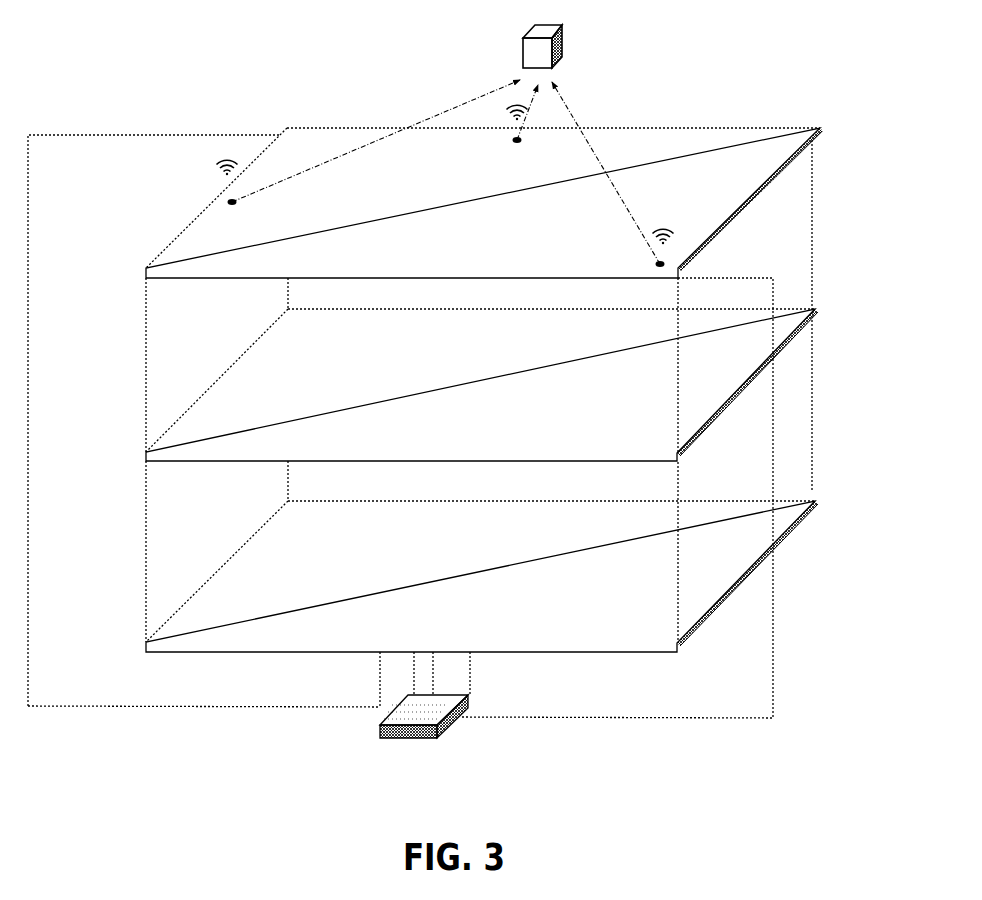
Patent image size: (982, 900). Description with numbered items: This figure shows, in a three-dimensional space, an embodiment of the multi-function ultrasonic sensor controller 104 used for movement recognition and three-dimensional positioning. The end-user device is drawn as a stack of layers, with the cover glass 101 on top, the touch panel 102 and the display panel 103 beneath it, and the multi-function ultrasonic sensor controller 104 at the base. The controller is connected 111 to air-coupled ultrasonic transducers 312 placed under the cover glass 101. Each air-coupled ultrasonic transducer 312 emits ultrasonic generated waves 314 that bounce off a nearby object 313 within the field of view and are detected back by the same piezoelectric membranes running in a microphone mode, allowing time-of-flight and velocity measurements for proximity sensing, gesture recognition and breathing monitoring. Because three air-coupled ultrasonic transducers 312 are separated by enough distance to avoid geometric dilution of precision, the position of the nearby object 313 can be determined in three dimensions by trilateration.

The cover glass 101 is at (183, 227).
The touch panel 102 is at (187, 407).
The display panel 103 is at (190, 600).
The multi-function ultrasonic sensor controller 104 is at (380, 727).
The connection 111 is at (100, 710).
The air-coupled ultrasonic transducer 312 is at (237, 207).
The nearby object 313 is at (567, 35).
The ultrasonic generated waves 314 is at (455, 102).